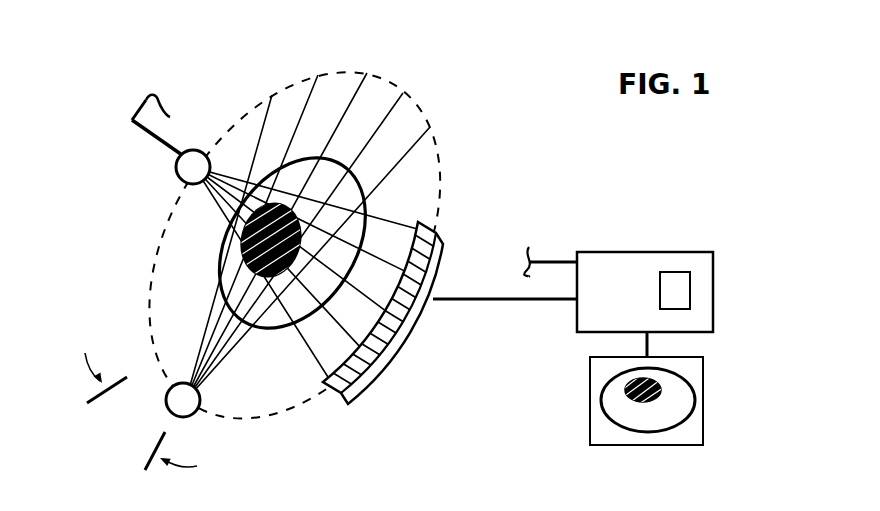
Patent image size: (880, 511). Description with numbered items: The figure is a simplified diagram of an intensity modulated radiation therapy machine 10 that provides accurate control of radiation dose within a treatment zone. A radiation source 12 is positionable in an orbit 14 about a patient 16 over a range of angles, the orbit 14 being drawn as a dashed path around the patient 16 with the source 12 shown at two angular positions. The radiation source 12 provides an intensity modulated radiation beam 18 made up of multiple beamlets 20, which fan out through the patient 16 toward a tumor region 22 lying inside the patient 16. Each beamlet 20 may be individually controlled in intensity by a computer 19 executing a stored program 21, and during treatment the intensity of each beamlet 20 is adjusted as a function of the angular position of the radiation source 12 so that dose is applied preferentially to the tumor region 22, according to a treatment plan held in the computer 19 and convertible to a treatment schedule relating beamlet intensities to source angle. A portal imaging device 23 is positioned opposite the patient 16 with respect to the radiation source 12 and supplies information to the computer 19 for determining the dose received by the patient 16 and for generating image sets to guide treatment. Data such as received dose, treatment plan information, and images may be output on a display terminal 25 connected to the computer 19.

The radiation therapy machine 10 is at (437, 74).
The radiation source 12 is at (194, 150).
The orbit 14 is at (150, 297).
The patient 16 is at (375, 200).
The intensity modulated radiation beam 18 is at (238, 150).
The computer 19 is at (625, 270).
The beamlets 20 is at (225, 240).
The stored program 21 is at (678, 290).
The tumor region 22 is at (283, 278).
The portal imaging device 23 is at (417, 330).
The display terminal 25 is at (703, 395).